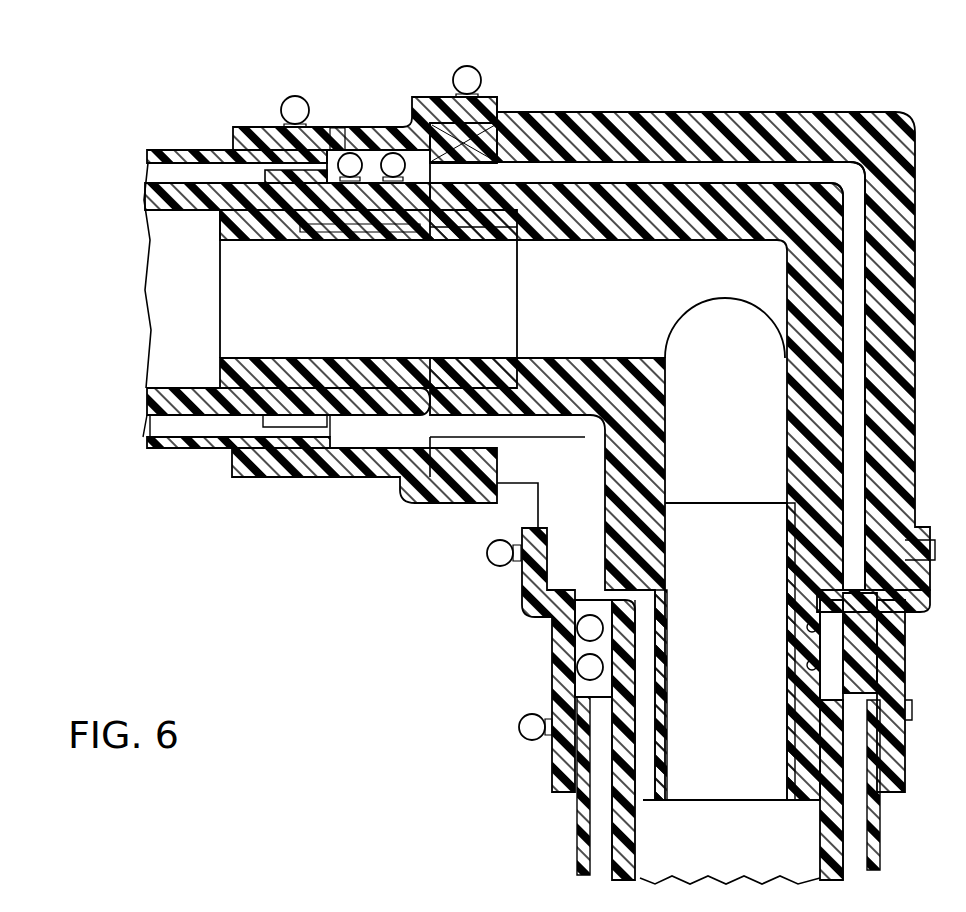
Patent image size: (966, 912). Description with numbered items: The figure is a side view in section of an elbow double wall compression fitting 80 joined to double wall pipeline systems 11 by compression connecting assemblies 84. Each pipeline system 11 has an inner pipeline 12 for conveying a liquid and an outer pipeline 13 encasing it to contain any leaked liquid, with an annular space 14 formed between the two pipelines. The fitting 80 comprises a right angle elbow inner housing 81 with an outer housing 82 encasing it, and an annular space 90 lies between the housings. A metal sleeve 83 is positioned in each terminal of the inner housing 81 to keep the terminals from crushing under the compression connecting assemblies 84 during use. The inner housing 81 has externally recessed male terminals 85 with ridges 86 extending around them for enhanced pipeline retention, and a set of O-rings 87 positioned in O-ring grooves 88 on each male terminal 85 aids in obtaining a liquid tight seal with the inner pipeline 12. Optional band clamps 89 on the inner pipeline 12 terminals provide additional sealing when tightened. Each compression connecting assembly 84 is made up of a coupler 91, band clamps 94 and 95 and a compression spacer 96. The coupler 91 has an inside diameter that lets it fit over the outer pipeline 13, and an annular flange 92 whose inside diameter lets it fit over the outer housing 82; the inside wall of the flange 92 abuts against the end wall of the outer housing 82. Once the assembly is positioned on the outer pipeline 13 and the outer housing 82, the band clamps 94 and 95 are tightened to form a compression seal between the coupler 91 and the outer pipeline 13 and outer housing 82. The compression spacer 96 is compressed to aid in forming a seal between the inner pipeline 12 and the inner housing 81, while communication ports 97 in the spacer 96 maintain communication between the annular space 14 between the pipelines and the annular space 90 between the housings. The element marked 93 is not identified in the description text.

The double wall pipeline system 11 is at (196, 322).
The inner pipeline 12 is at (168, 403).
The outer pipeline 13 is at (185, 447).
The annular space 14 is at (190, 432).
The double wall compression fitting 80 is at (516, 504).
The right angle elbow inner housing 81 is at (672, 218).
The outer housing 82 is at (680, 118).
The metal sleeve 83 is at (368, 329).
The compression connecting assembly 84 is at (350, 86).
The externally recessed male terminal 85 is at (263, 224).
The ridge 86 is at (228, 233).
The O-ring 87 is at (340, 228).
The O-ring groove 88 is at (358, 152).
The band clamp 89 is at (392, 150).
The annular space 90 is at (783, 170).
The coupler 91 is at (263, 130).
The annular flange 92 is at (485, 97).
The seal insert 93 is at (495, 145).
The band clamp 94 is at (265, 130).
The band clamp 95 is at (466, 66).
The compression spacer 96 is at (267, 180).
The communication port 97 is at (342, 130).